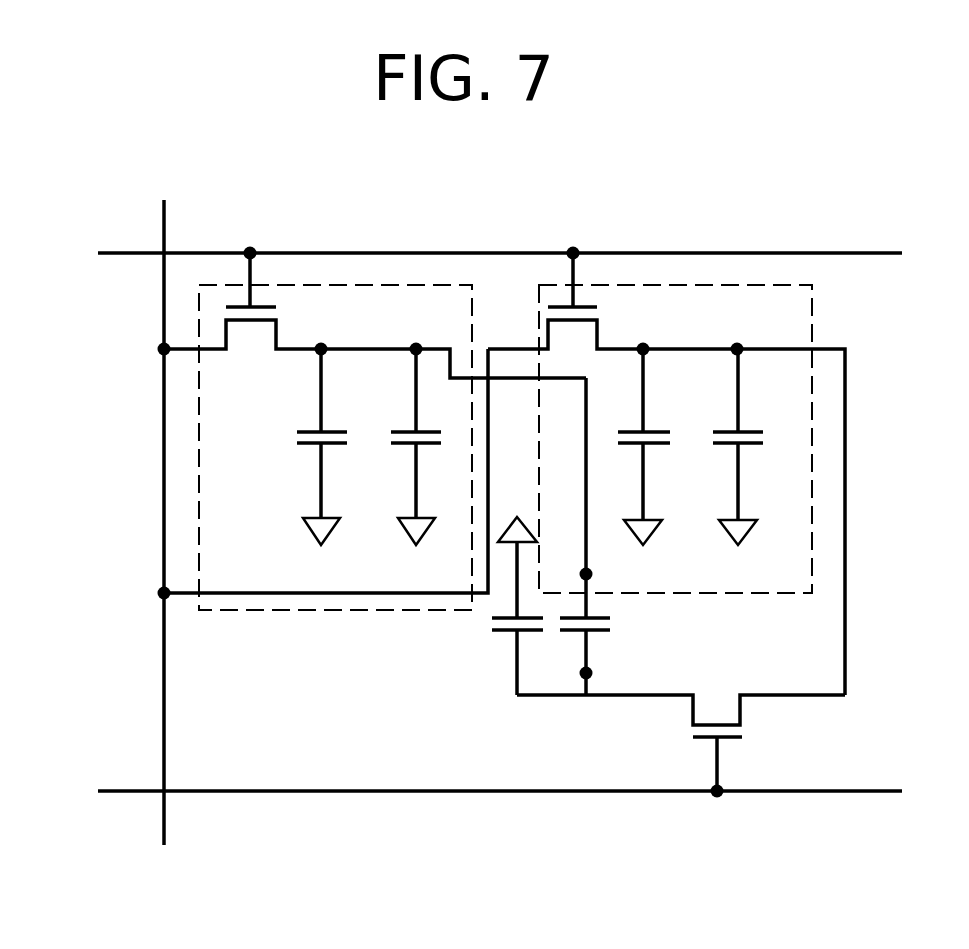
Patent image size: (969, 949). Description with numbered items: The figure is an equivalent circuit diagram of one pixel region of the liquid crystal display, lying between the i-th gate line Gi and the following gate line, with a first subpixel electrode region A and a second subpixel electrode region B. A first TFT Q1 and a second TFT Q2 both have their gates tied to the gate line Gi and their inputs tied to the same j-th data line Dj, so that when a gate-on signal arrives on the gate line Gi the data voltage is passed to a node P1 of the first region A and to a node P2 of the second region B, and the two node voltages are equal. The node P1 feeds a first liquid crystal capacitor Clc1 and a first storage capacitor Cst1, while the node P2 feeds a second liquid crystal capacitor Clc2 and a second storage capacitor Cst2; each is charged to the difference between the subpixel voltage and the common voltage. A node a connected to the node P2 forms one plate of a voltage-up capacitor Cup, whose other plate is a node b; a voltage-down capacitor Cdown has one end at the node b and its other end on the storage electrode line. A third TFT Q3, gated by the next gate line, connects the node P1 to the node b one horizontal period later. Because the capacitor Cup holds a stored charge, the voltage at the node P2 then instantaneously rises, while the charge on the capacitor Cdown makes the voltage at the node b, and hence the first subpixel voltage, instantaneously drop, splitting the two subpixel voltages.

The i-th gate line Gi is at (476, 253).
The j-th data line Dj is at (163, 503).
The first subpixel electrode region A is at (698, 285).
The second subpixel electrode region B is at (358, 285).
The first TFT Q1 is at (567, 298).
The second TFT Q2 is at (240, 301).
The third TFT Q3 is at (681, 746).
The node P1 is at (744, 497).
The node P2 is at (453, 338).
The first liquid crystal capacitor Clc1 is at (627, 444).
The second liquid crystal capacitor Clc2 is at (289, 444).
The first storage capacitor Cst1 is at (718, 447).
The second storage capacitor Cst2 is at (395, 447).
The voltage-up capacitor Cup is at (611, 536).
The voltage-down capacitor Cdown is at (477, 606).
The node a is at (576, 574).
The node b is at (576, 673).